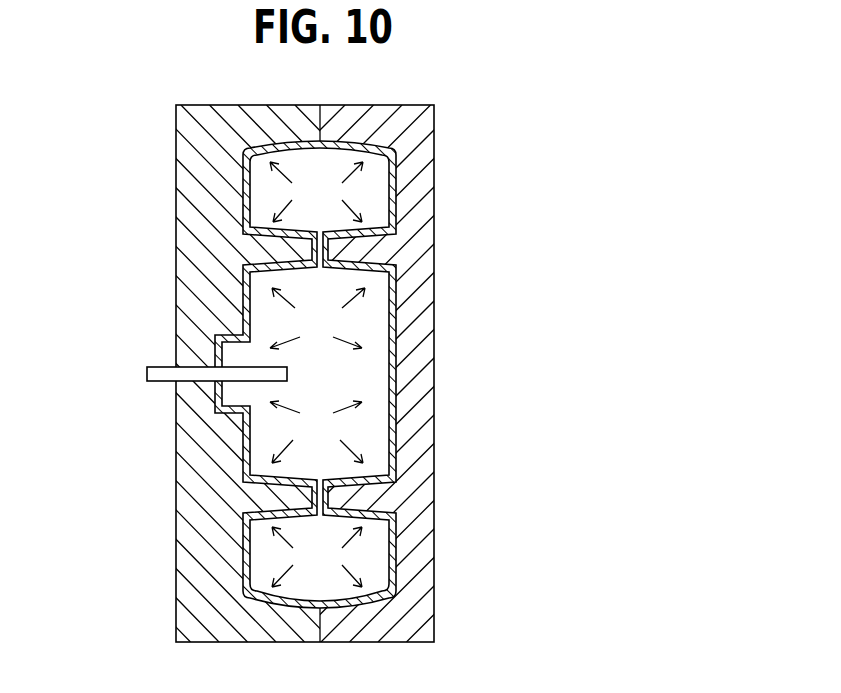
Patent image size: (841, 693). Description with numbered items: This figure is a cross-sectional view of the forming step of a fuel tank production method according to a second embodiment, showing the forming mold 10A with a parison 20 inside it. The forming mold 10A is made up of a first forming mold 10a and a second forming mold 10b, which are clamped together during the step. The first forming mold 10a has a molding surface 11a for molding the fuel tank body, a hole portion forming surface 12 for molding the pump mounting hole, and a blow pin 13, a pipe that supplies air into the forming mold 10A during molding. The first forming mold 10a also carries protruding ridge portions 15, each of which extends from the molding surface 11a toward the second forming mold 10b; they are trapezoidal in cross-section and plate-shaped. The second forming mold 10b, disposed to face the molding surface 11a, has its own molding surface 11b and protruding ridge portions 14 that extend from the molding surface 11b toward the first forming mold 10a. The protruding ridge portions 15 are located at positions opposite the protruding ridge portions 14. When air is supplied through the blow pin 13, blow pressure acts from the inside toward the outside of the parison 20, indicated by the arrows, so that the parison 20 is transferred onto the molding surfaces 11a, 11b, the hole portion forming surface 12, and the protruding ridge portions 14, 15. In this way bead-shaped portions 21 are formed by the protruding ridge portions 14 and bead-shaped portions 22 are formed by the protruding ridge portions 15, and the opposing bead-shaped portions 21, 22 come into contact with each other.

The forming mold 10A is at (557, 164).
The first forming mold 10a is at (188, 132).
The second forming mold 10b is at (423, 133).
The molding surface 11a is at (248, 214).
The molding surface 11b is at (392, 214).
The hole portion forming surface 12 is at (236, 346).
The blow pin 13 is at (162, 382).
The protruding ridge portion 14 is at (365, 250).
The protruding ridge portion 15 is at (277, 250).
The parison 20 is at (392, 368).
The bead-shaped portion 21 is at (364, 275).
The bead-shaped portion 22 is at (276, 275).